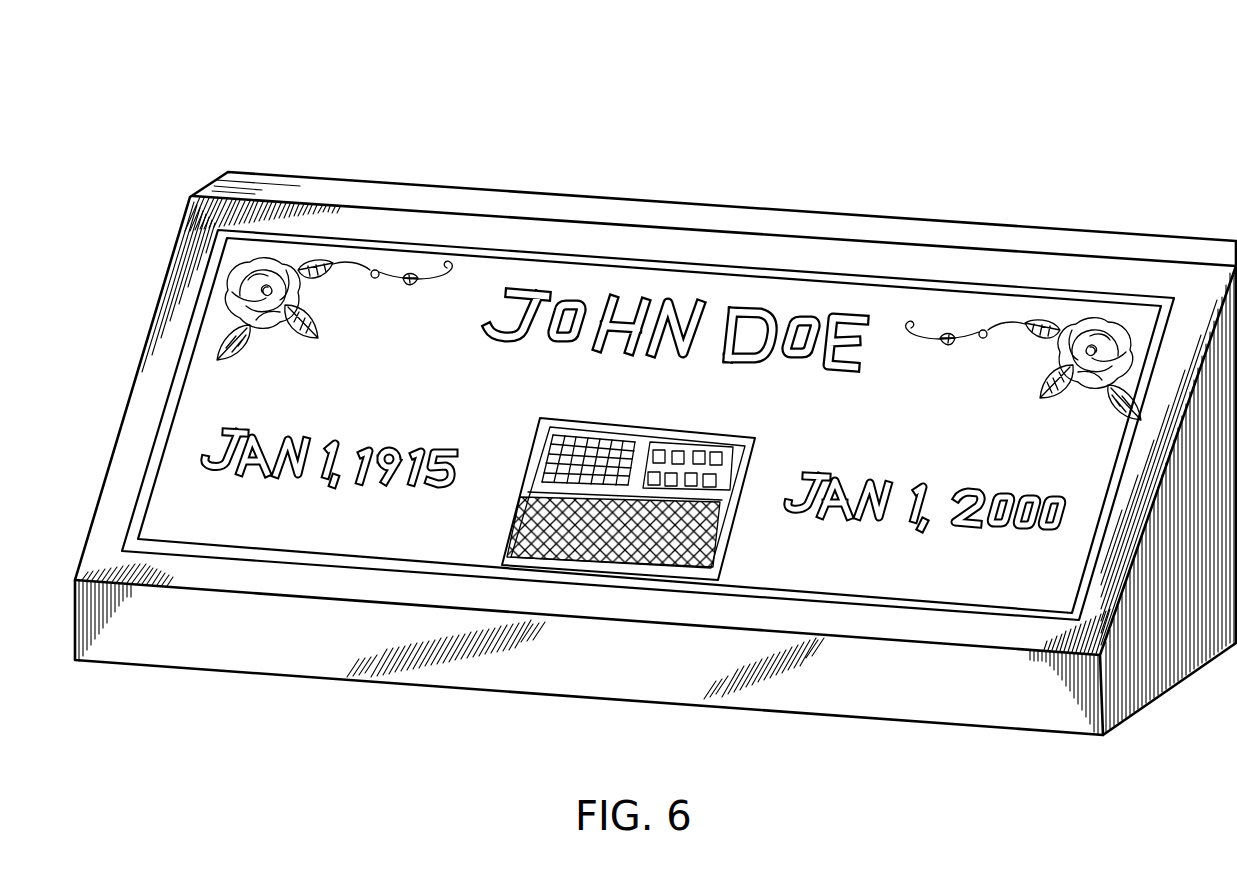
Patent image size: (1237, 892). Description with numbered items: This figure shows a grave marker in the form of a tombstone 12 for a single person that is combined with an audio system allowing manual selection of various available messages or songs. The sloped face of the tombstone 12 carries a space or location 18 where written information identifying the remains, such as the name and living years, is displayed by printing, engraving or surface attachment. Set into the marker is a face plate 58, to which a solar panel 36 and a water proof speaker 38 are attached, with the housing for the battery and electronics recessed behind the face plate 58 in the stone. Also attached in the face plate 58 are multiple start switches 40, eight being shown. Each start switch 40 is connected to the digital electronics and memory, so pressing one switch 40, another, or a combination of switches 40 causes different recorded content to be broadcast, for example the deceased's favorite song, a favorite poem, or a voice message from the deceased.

The tombstone 12 is at (1050, 245).
The space or location for written information 18 is at (558, 285).
The solar panel 36 is at (580, 512).
The water proof speaker 38 is at (593, 440).
The face plate 58 is at (688, 438).
The start switches 40 is at (652, 477).